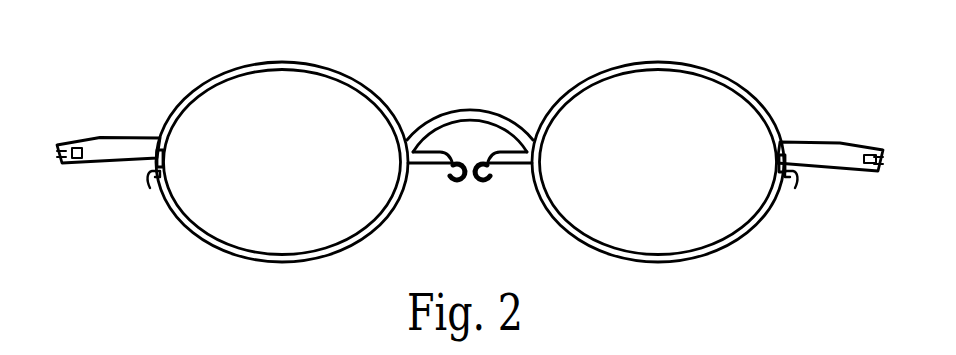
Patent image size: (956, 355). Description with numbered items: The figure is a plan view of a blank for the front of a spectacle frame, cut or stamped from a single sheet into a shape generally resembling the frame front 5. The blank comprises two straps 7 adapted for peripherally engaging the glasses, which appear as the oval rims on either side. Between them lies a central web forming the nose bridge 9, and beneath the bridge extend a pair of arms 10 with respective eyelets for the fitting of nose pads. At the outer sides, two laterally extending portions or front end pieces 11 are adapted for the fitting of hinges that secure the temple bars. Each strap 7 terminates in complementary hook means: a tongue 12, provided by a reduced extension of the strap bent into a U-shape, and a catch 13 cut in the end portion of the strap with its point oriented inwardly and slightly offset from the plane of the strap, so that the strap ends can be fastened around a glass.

The frame front 5 is at (325, 64).
The straps 7 is at (372, 88).
The nose bridge 9 is at (486, 110).
The arms 10 is at (499, 169).
The front end pieces 11 is at (110, 137).
The tongue 12 is at (148, 165).
The catch 13 is at (143, 187).